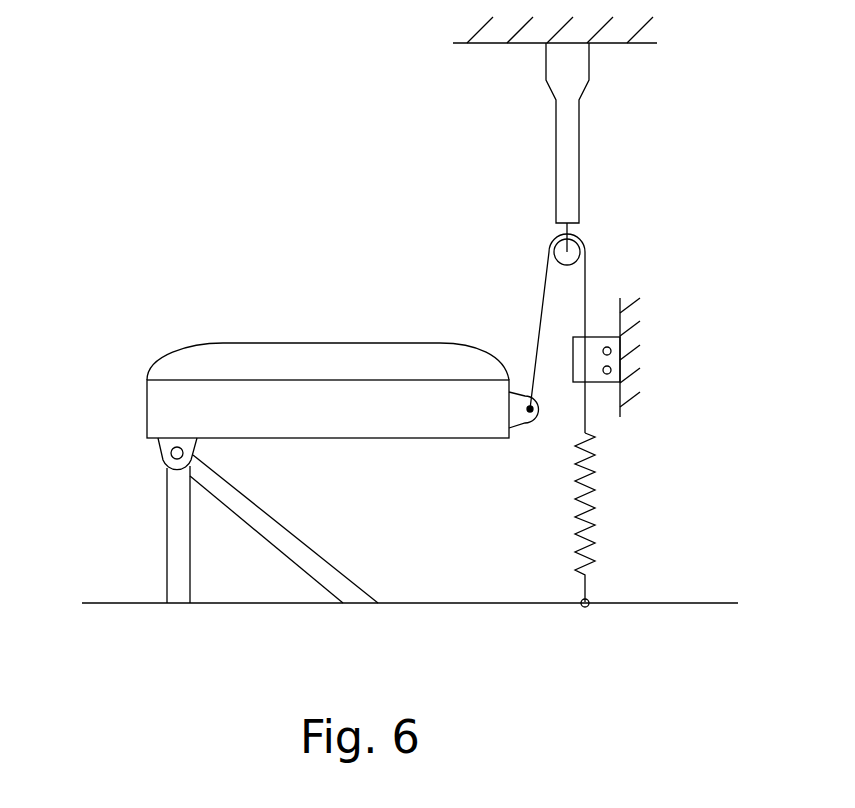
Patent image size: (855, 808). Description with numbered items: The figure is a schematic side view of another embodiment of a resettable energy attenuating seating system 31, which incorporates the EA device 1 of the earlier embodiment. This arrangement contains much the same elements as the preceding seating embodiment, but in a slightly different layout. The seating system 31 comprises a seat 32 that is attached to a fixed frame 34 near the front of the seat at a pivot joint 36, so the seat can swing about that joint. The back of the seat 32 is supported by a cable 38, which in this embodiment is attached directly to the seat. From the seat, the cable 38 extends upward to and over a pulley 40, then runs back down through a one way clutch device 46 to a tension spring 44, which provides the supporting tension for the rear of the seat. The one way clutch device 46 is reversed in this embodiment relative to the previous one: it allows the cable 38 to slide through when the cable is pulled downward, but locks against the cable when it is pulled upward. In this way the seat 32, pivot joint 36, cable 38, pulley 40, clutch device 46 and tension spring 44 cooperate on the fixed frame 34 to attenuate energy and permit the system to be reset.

The EA device 1 is at (579, 125).
The resettable energy attenuating seating system 31 is at (285, 171).
The seat 32 is at (289, 343).
The fixed frame 34 is at (100, 531).
The pivot joint 36 is at (162, 453).
The cable 38 is at (537, 299).
The pulley 40 is at (587, 243).
The tension spring 44 is at (597, 522).
The one way clutch device 46 is at (593, 372).